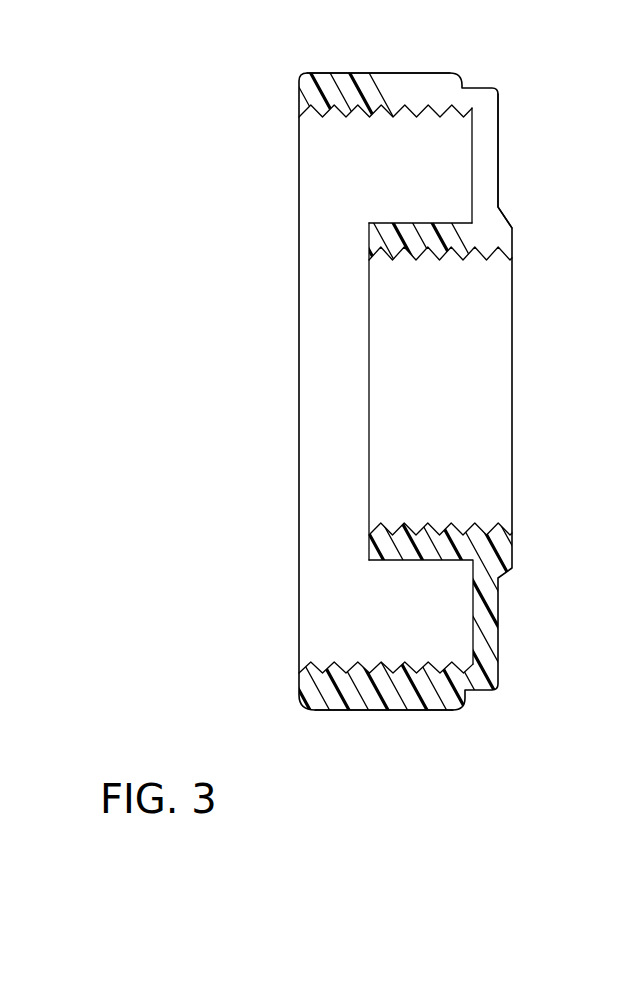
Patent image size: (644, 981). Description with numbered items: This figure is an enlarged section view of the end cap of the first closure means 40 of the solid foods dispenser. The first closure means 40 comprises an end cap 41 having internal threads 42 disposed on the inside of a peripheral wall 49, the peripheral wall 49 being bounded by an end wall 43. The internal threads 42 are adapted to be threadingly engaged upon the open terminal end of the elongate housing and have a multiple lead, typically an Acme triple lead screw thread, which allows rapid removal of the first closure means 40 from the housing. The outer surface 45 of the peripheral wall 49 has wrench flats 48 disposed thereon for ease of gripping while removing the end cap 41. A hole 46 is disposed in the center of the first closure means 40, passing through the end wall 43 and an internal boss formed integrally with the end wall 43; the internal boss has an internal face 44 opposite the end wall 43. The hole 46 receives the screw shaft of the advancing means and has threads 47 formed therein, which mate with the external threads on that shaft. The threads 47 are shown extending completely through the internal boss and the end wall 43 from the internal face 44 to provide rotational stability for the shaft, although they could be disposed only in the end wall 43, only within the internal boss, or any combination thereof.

The first closure means 40 is at (204, 614).
The end cap 41 is at (483, 218).
The internal threads 42 is at (407, 670).
The end wall 43 is at (472, 162).
The internal face 44 is at (369, 243).
The outer surface 45 is at (432, 72).
The hole 46 is at (430, 402).
The threads 47 is at (460, 258).
The wrench flats 48 is at (380, 710).
The peripheral wall 49 is at (342, 89).